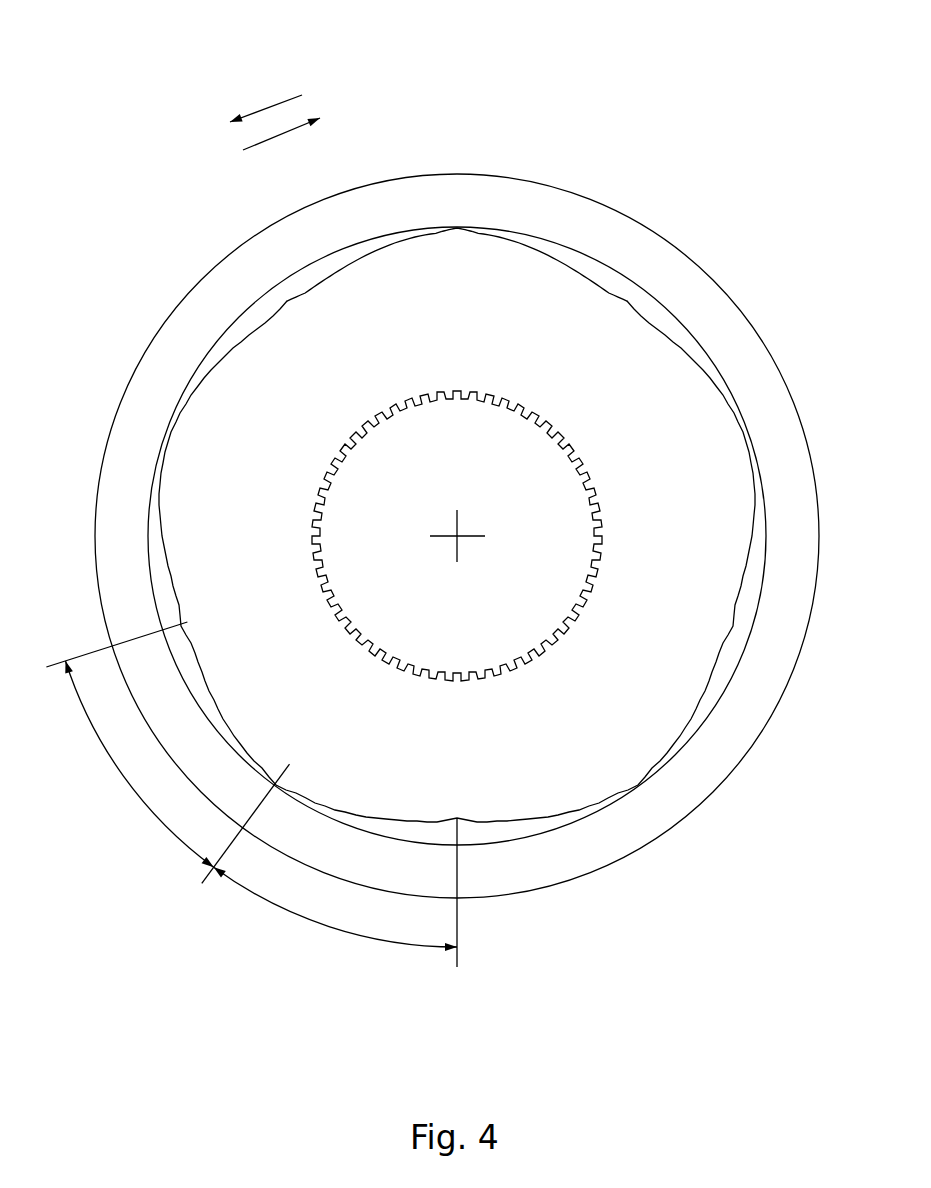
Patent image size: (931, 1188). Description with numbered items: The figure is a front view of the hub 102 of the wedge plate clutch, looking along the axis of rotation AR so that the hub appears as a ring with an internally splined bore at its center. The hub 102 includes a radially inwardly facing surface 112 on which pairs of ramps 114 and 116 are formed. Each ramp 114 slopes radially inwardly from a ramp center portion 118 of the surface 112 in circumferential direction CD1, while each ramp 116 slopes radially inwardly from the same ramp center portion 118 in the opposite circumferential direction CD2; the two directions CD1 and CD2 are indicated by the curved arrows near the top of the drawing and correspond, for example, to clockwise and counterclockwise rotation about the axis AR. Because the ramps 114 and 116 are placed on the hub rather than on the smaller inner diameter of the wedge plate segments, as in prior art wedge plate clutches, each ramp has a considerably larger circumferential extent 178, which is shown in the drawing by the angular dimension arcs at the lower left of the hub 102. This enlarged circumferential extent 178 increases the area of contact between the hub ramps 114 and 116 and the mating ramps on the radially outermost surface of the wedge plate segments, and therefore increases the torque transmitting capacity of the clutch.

The hub 102 is at (705, 98).
The radially inwardly facing surface 112 is at (396, 246).
The ramp 114 is at (558, 262).
The ramp 116 is at (350, 262).
The ramp center portion 118 is at (455, 228).
The circumferential extent 178 is at (150, 808).
The axis of rotation AR is at (457, 535).
The circumferential direction CD1 is at (268, 140).
The circumferential direction CD2 is at (265, 104).